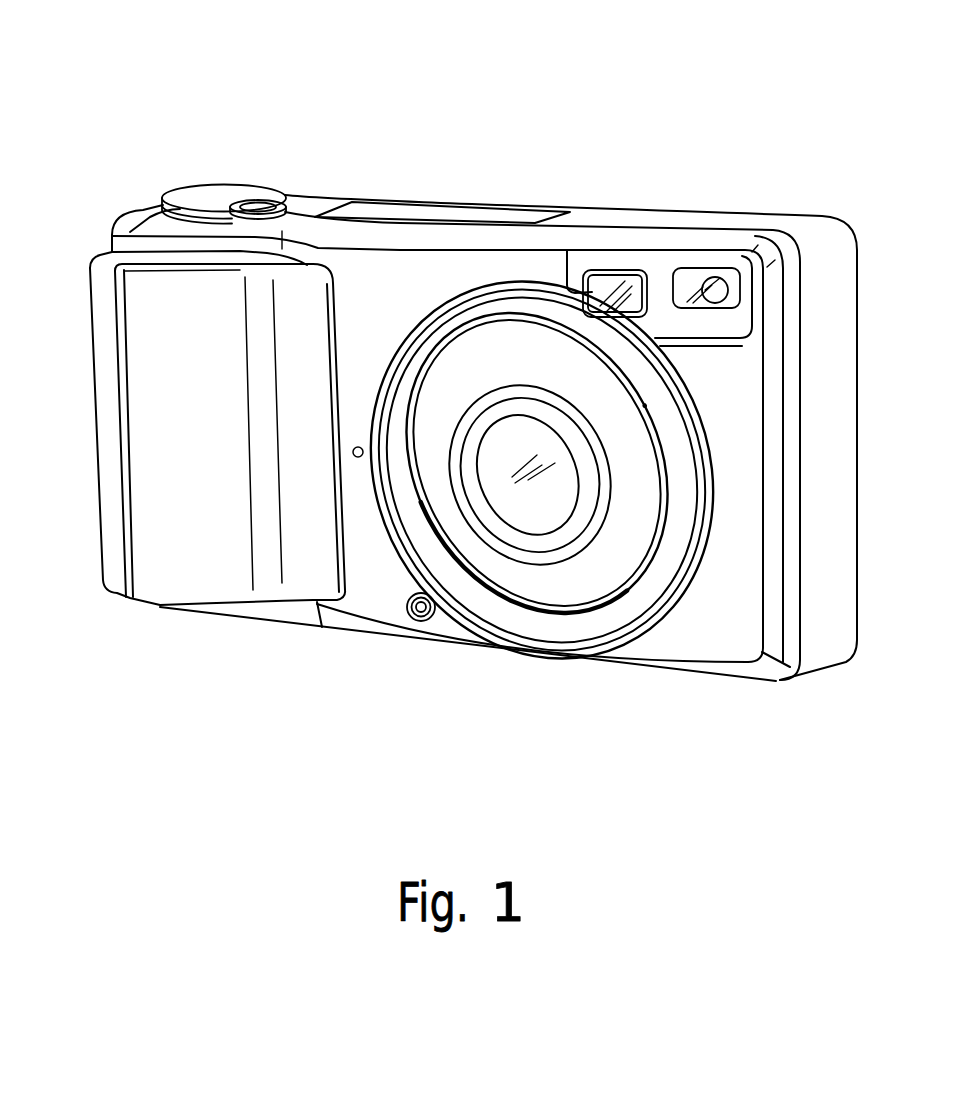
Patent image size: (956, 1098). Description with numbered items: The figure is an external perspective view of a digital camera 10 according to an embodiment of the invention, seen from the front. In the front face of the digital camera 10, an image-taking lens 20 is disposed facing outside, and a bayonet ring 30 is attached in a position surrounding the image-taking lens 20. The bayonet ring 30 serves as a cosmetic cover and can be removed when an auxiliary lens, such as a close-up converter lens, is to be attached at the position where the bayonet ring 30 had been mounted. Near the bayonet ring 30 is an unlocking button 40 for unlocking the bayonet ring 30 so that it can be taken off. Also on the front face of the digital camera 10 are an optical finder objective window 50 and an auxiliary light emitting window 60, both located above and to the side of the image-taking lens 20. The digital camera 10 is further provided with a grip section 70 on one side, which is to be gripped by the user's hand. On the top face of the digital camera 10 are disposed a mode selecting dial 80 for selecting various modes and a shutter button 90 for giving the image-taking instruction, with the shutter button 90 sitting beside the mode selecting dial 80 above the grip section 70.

The digital camera 10 is at (587, 108).
The image-taking lens 20 is at (535, 520).
The bayonet ring 30 is at (663, 578).
The unlocking button 40 is at (410, 617).
The optical finder objective window 50 is at (598, 283).
The auxiliary light emitting window 60 is at (728, 286).
The grip section 70 is at (107, 364).
The mode selecting dial 80 is at (207, 190).
The shutter button 90 is at (257, 203).